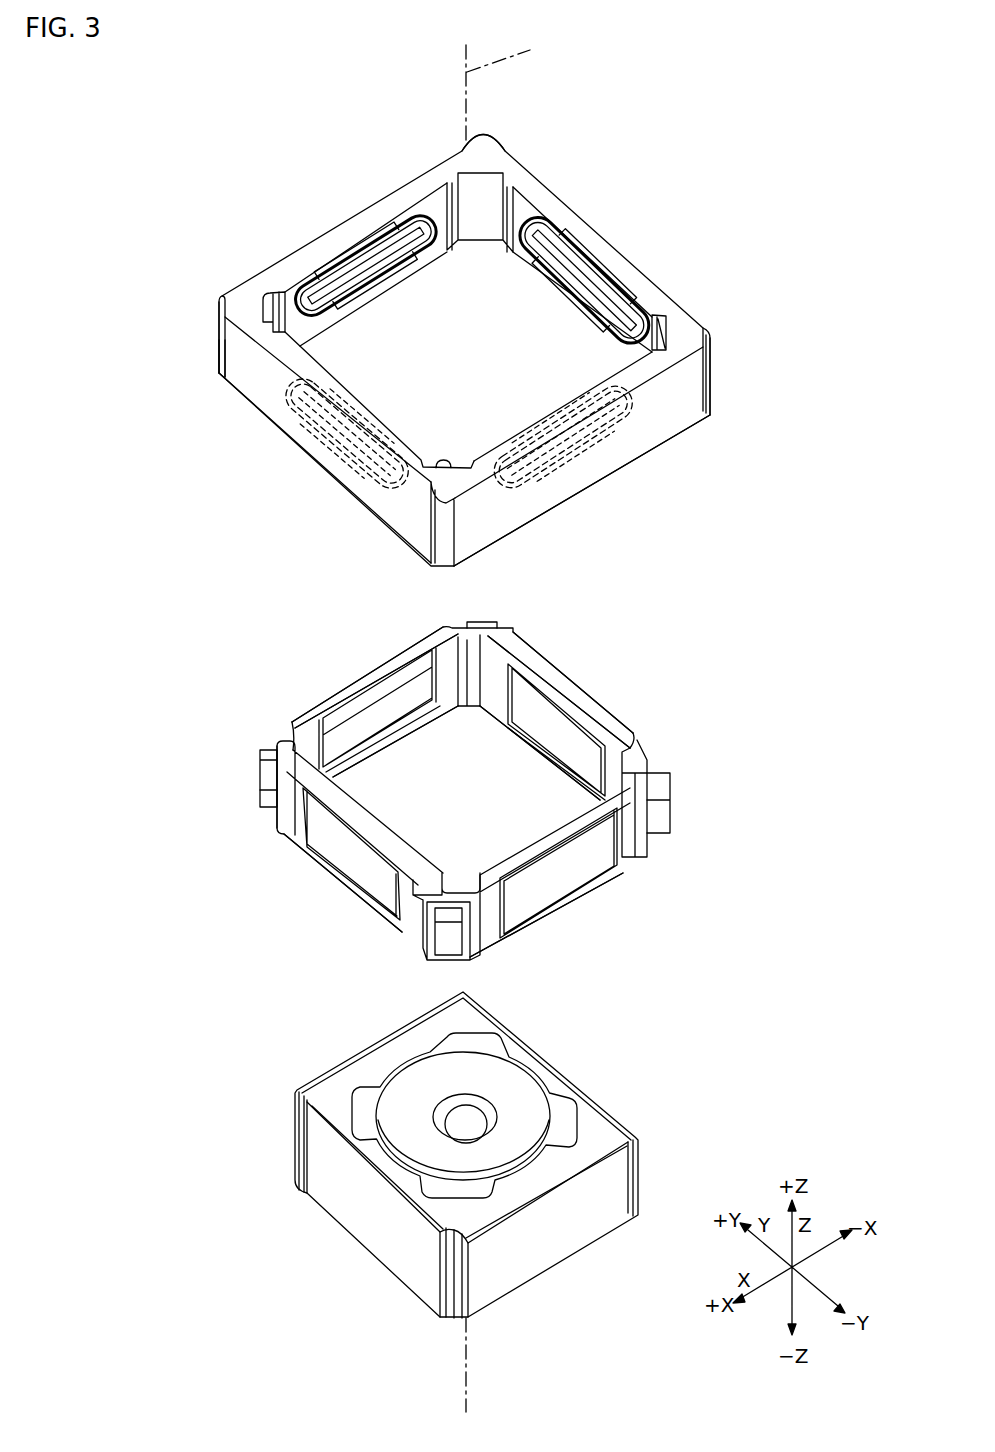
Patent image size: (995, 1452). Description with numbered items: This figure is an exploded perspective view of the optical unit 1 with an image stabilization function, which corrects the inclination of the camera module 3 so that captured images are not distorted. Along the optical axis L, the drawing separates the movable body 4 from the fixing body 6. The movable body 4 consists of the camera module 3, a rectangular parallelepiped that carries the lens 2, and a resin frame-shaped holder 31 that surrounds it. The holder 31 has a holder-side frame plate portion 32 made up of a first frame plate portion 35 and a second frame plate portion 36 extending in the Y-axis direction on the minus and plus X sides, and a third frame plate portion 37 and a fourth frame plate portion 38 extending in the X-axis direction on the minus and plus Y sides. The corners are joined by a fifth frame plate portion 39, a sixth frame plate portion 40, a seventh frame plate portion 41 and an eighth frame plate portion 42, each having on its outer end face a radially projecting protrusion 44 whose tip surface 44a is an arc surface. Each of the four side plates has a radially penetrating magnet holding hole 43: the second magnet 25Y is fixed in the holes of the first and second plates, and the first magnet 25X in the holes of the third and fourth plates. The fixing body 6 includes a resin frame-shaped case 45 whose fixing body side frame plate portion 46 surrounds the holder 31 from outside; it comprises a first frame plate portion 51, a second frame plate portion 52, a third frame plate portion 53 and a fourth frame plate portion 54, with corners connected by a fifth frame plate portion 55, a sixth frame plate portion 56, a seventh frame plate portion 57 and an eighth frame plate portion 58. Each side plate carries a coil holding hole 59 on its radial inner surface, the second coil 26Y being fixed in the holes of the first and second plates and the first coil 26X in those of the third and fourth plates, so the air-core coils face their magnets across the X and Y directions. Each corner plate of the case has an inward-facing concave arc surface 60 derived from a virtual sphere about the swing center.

The optical unit with an image stabilization function 1 is at (169, 183).
The lens 2 is at (468, 1123).
The camera module 3 is at (273, 1112).
The movable body 4 is at (162, 950).
The fixing body 6 is at (190, 295).
The optical axis L is at (508, 727).
The first magnet 25X is at (370, 725).
The second magnet 25Y is at (564, 747).
The first coil 26X is at (365, 257).
The second coil 26Y is at (583, 268).
The holder 31 is at (282, 846).
The holder-side frame plate portion 32 is at (278, 788).
The holder-side first frame plate portion 35 is at (513, 673).
The holder-side second frame plate portion 36 is at (290, 815).
The holder-side third frame plate portion 37 is at (628, 848).
The holder-side fourth frame plate portion 38 is at (443, 662).
The holder-side fifth frame plate portion 39 is at (650, 833).
The holder-side sixth frame plate portion 40 is at (282, 746).
The holder-side seventh frame plate portion 41 is at (512, 630).
The holder-side eighth frame plate portion 42 is at (472, 963).
The magnet holding hole 43 is at (330, 723).
The protrusion 44 is at (470, 781).
The tip surface 44a is at (486, 626).
The case 45 is at (236, 349).
The fixing body side frame plate portion 46 is at (245, 378).
The fixing body side first frame plate portion 51 is at (562, 222).
The fixing body side second frame plate portion 52 is at (303, 440).
The fixing body side third frame plate portion 53 is at (656, 420).
The fixing body side fourth frame plate portion 54 is at (432, 202).
The fixing body side fifth frame plate portion 55 is at (690, 336).
The fixing body side sixth frame plate portion 56 is at (245, 302).
The fixing body side seventh frame plate portion 57 is at (488, 160).
The fixing body side eighth frame plate portion 58 is at (428, 507).
The coil holding hole 59 is at (297, 303).
The arc surface 60 is at (470, 200).